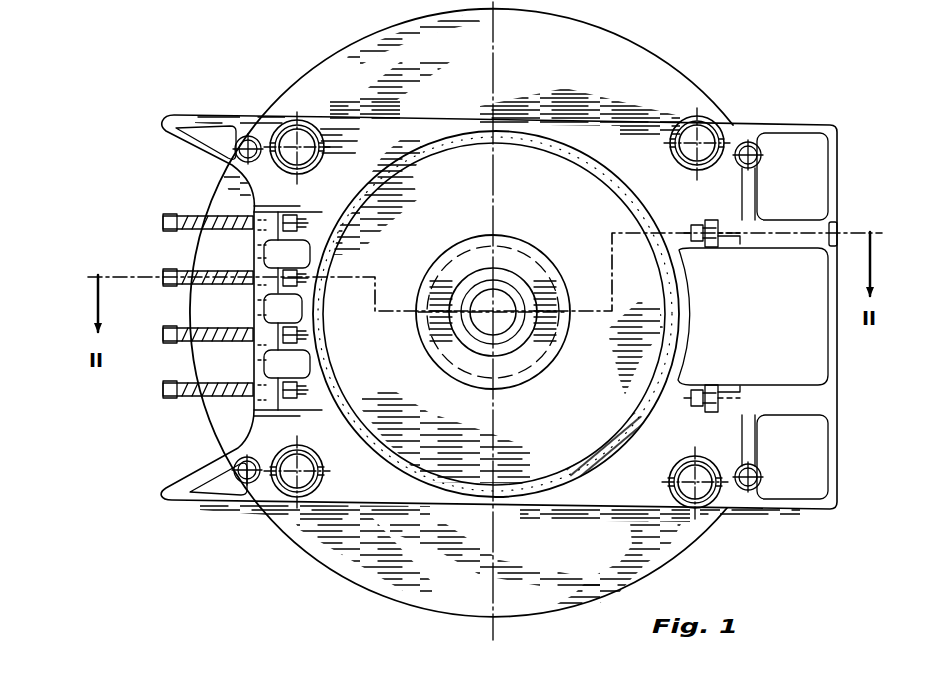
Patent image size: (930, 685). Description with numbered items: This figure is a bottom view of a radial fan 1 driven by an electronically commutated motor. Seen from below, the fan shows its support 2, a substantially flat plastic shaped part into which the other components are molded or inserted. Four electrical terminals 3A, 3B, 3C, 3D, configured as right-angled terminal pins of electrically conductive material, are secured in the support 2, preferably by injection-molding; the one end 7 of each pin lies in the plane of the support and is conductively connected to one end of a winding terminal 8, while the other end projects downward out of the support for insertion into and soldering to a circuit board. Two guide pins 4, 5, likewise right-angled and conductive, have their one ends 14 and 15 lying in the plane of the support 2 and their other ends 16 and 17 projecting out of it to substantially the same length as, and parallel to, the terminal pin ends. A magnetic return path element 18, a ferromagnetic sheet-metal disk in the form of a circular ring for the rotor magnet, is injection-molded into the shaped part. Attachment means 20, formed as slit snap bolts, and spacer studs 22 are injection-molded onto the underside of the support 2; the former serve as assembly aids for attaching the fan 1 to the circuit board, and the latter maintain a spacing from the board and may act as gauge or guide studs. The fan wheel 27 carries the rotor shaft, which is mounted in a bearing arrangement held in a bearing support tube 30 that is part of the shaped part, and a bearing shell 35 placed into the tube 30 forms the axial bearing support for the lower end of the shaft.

The radial fan 1 is at (661, 47).
The support 2 is at (428, 506).
The electrical terminal 3A is at (174, 218).
The electrical terminal 3B is at (166, 274).
The electrical terminal 3C is at (176, 343).
The electrical terminal 3D is at (180, 406).
The guide pin 4 is at (703, 224).
The guide pin 5 is at (698, 410).
The one end of terminal pin 7 is at (176, 231).
The winding terminal 8 is at (222, 236).
The one end of guide pin 14 is at (733, 241).
The one end of guide pin 15 is at (742, 380).
The other end of guide pin 16 is at (696, 248).
The other end of guide pin 17 is at (696, 387).
The magnetic return path element 18 is at (566, 415).
The attachment means 20 is at (303, 121).
The spacer stud 22 is at (245, 121).
The fan wheel 27 is at (548, 66).
The bearing support tube 30 is at (485, 276).
The bearing shell 35 is at (505, 302).